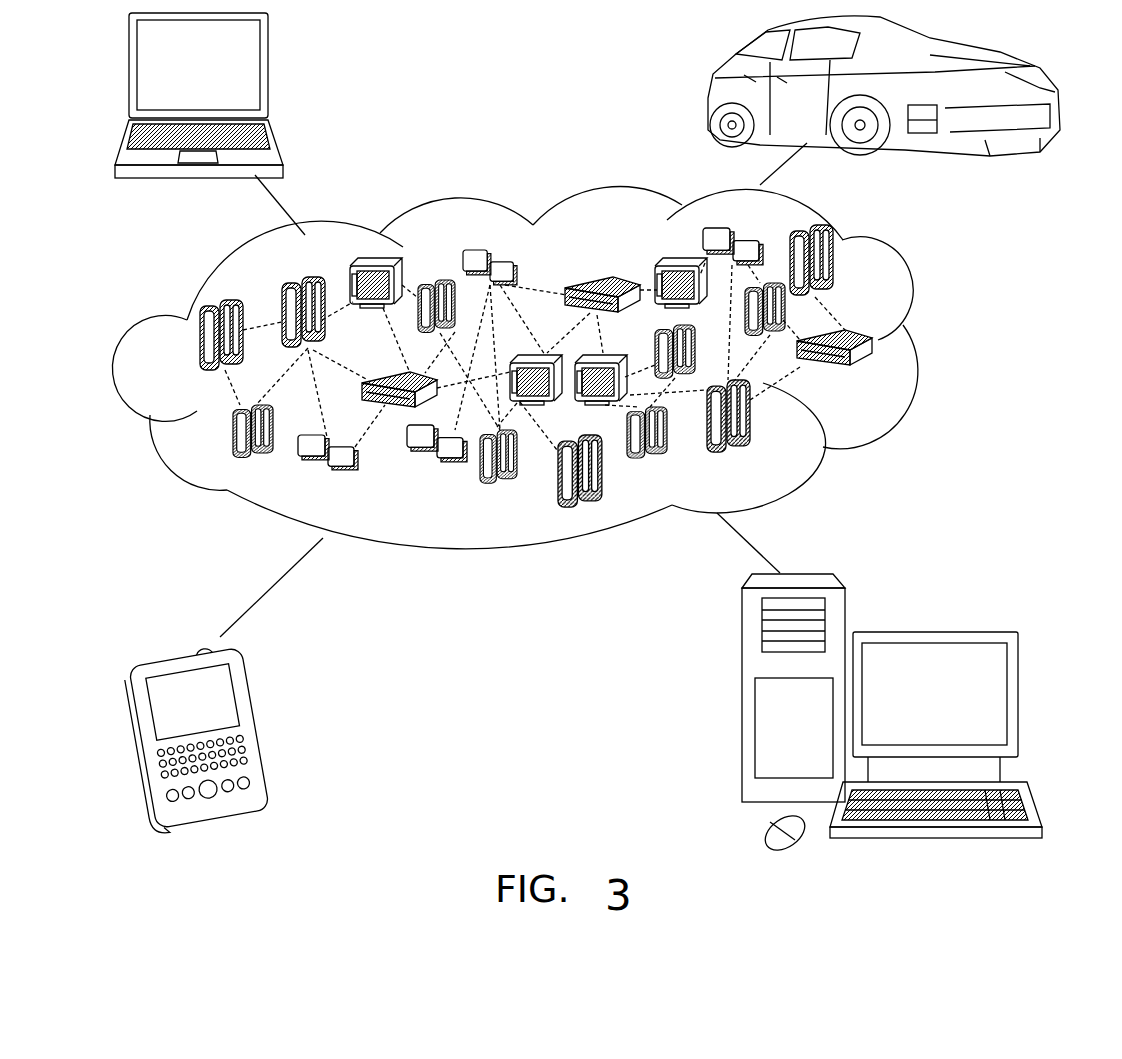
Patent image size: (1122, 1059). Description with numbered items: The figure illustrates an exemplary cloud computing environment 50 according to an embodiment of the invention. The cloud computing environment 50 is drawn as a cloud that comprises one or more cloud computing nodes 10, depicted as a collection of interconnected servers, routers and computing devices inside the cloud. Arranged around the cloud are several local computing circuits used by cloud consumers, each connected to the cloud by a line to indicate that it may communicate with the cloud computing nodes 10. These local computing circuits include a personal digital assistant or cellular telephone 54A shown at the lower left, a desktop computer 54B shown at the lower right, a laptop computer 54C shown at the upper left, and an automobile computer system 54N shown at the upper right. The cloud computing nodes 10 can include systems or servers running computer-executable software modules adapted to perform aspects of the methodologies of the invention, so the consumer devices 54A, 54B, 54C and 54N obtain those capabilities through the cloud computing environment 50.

The cloud computing nodes 10 is at (878, 376).
The cloud computing environment 50 is at (935, 347).
The personal digital assistant or cellular telephone 54A is at (258, 725).
The desktop computer 54B is at (932, 630).
The laptop computer 54C is at (268, 75).
The automobile computer system 54N is at (710, 92).